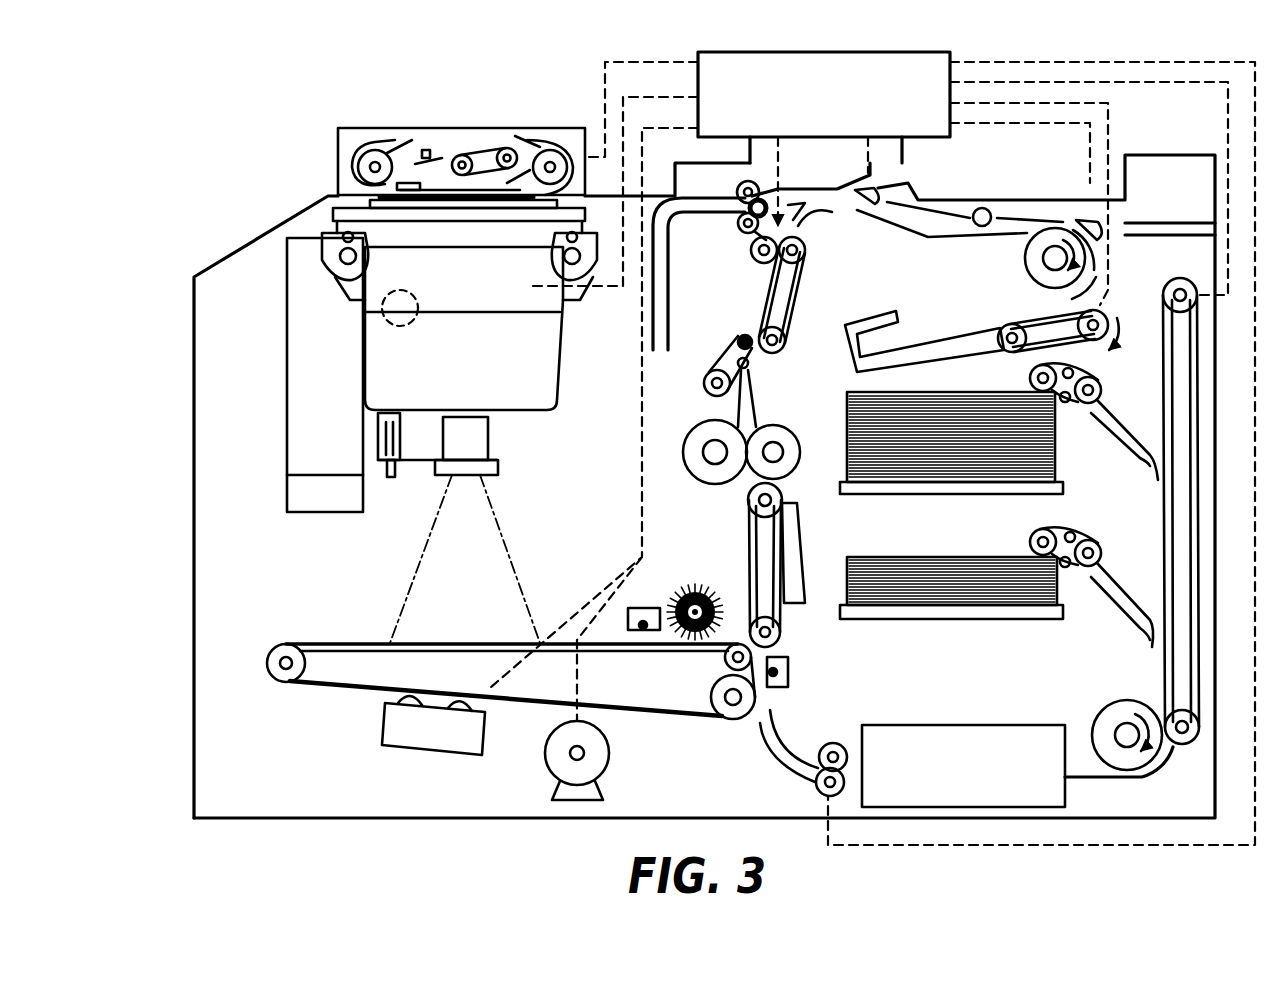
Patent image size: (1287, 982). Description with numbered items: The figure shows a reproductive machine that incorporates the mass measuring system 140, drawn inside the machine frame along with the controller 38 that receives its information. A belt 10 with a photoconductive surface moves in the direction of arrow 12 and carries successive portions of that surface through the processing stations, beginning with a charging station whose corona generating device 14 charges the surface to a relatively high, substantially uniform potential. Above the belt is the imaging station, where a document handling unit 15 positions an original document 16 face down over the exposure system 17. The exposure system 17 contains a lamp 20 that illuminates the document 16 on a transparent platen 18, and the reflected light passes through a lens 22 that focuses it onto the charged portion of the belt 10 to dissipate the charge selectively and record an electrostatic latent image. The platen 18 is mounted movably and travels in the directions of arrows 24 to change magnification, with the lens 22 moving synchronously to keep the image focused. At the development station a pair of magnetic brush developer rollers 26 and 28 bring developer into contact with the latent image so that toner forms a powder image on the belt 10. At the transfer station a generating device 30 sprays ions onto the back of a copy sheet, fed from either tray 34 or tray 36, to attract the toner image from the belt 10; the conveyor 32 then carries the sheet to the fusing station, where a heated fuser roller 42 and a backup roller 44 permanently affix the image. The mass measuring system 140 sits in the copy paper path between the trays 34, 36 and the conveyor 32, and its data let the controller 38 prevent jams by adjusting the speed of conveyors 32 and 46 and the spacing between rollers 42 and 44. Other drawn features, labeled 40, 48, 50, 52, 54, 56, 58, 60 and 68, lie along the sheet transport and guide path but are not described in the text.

The belt 10 is at (572, 642).
The arrow 12 is at (440, 602).
The corona generating device 14 is at (643, 605).
The document handling unit 15 is at (487, 114).
The original document 16 is at (442, 160).
The exposure system 17 is at (530, 421).
The transparent platen 18 is at (447, 190).
The lamp 20 is at (400, 326).
The lens 22 is at (483, 443).
The arrows 24 is at (245, 428).
The magnetic brush developer roller 26 is at (383, 699).
The magnetic brush developer roller 28 is at (455, 712).
The generating device 30 is at (789, 677).
The conveyor 32 is at (747, 565).
The tray 34 is at (983, 497).
The tray 36 is at (967, 620).
The controller 38 is at (878, 52).
The roller nip assembly 40 is at (767, 421).
The heated fuser roller 42 is at (705, 427).
The backup roller 44 is at (803, 452).
The conveyor 46 is at (796, 298).
The direction arrow 48 is at (809, 218).
The inlet guide 50 is at (672, 283).
The diverter gate 52 is at (876, 192).
The bypass guide path 54 is at (1007, 212).
The diverter roller 56 is at (1103, 228).
The vertical transport belt 58 is at (1097, 286).
The transfer guide and belt 60 is at (950, 337).
The brush roller 68 is at (717, 592).
The mass measuring system 140 is at (978, 725).